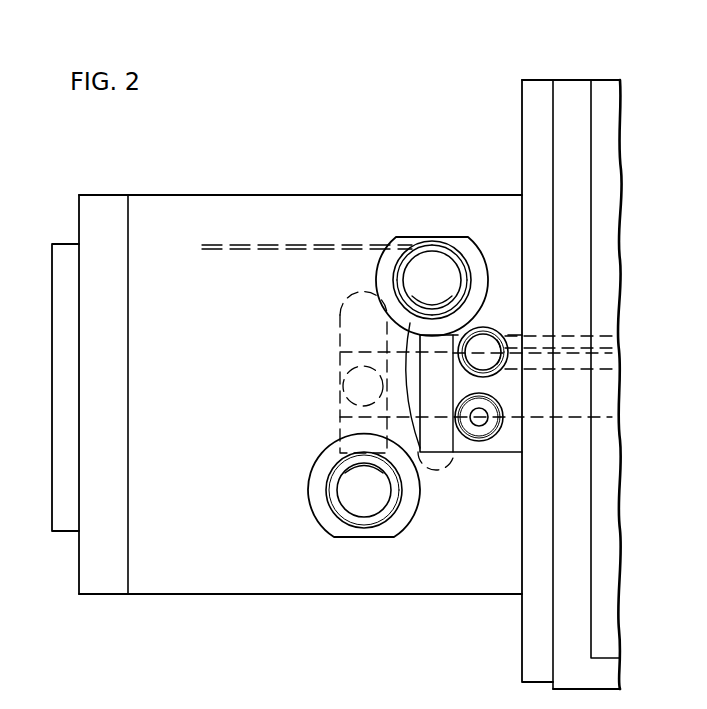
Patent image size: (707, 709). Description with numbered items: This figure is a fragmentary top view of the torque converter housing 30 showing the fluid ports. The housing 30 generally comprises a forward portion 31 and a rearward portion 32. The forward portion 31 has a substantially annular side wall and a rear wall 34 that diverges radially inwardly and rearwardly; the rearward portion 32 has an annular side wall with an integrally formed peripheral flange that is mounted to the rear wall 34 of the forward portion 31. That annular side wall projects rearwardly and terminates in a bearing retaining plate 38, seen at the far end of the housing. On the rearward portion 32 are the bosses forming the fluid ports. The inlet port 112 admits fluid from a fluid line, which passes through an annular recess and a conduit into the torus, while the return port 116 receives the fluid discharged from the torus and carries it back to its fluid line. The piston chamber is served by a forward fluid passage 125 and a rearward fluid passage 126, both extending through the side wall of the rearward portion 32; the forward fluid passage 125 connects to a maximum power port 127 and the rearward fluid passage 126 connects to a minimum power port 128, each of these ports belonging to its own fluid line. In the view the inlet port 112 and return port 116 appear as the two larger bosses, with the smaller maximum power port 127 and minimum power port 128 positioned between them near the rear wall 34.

The housing 30 is at (495, 160).
The forward portion 31 is at (566, 93).
The rearward portion 32 is at (229, 212).
The rear wall 34 is at (533, 650).
The bearing retaining plate 38 is at (100, 572).
The inlet port 112 is at (412, 250).
The return port 116 is at (362, 507).
The forward fluid passage 125 is at (512, 357).
The rearward fluid passage 126 is at (480, 413).
The maximum power port 127 is at (482, 335).
The minimum power port 128 is at (480, 433).